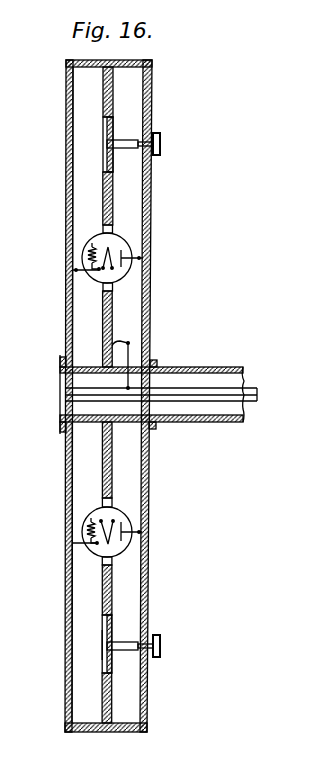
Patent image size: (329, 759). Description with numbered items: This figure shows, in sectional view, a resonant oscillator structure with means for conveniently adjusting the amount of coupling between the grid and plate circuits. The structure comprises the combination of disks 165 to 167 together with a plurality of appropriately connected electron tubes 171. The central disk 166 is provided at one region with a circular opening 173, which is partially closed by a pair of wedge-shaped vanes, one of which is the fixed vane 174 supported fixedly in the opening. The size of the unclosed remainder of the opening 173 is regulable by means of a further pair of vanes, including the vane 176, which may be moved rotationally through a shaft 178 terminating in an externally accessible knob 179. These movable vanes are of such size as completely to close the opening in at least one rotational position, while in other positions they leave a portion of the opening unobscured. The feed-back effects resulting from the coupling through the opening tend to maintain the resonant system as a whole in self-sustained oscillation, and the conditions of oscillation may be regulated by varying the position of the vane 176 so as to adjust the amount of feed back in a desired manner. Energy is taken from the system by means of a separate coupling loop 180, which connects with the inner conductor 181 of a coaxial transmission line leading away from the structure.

The disk 165 is at (66, 121).
The central disk 166 is at (73, 195).
The disk 167 is at (148, 197).
The electron tube 171 is at (130, 245).
The circular opening 173 is at (107, 620).
The wedge-shaped vane 174 is at (103, 645).
The vane 176 is at (112, 163).
The shaft 178 is at (122, 140).
The knob 179 is at (159, 136).
The coupling loop 180 is at (128, 343).
The inner conductor 181 is at (252, 388).